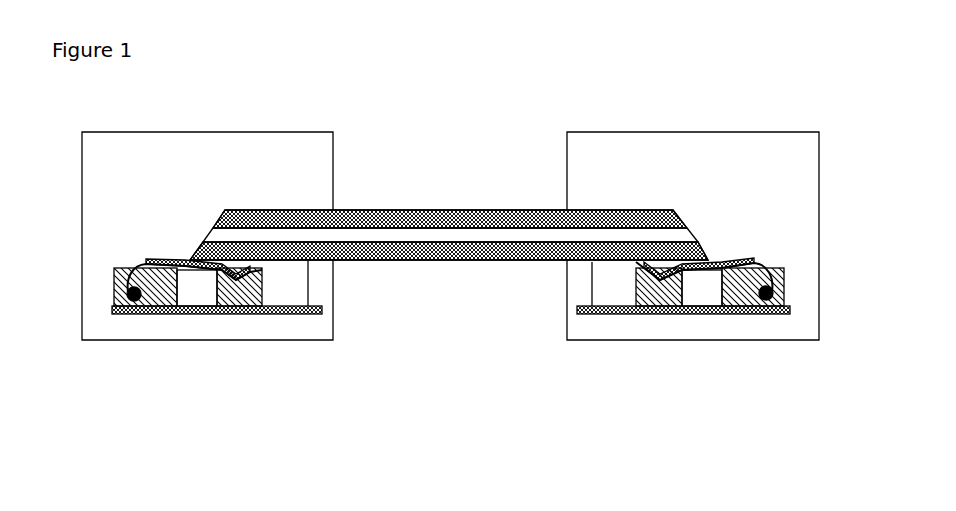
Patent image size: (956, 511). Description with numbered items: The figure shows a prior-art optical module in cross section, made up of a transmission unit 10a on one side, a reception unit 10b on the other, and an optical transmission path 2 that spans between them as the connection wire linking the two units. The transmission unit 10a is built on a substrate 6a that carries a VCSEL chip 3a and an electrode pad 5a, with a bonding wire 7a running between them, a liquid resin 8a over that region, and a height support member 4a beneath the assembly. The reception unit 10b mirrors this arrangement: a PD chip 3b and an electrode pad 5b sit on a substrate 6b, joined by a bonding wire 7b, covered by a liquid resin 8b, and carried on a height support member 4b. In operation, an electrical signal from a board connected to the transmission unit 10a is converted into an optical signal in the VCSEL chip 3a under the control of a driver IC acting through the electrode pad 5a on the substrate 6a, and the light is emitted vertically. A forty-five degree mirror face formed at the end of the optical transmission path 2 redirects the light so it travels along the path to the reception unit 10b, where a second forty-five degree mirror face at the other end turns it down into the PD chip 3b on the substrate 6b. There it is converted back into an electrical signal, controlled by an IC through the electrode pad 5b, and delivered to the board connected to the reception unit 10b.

The optical transmission path 2 is at (435, 208).
The transmission unit 10a is at (778, 132).
The reception unit 10b is at (290, 132).
The VCSEL chip 3a is at (678, 314).
The PD chip 3b is at (220, 313).
The height support member 4a is at (577, 306).
The height support member 4b is at (322, 306).
The electrode pad 5a is at (790, 314).
The electrode pad 5b is at (113, 314).
The substrate 6a is at (723, 314).
The substrate 6b is at (178, 315).
The bonding wire 7a is at (750, 262).
The bonding wire 7b is at (147, 262).
The liquid resin 8a is at (782, 262).
The liquid resin 8b is at (122, 262).